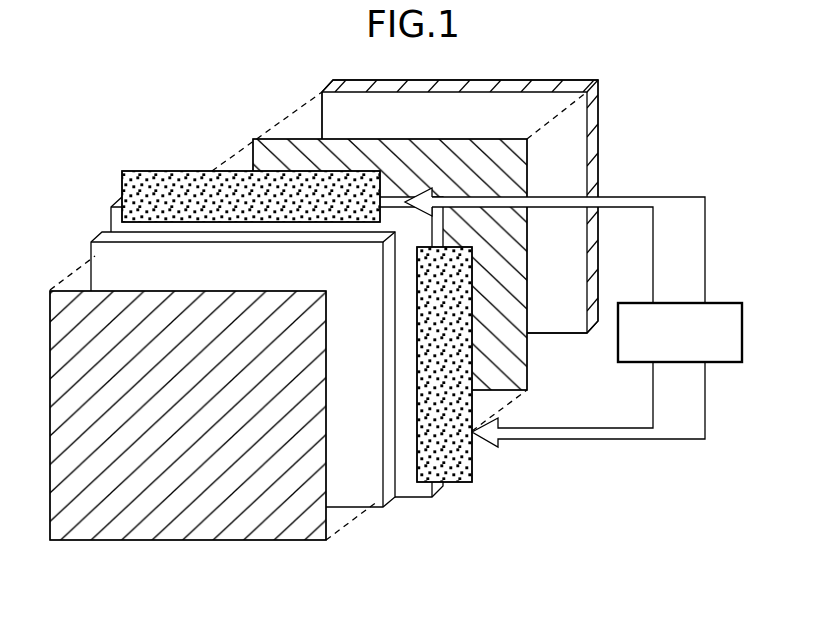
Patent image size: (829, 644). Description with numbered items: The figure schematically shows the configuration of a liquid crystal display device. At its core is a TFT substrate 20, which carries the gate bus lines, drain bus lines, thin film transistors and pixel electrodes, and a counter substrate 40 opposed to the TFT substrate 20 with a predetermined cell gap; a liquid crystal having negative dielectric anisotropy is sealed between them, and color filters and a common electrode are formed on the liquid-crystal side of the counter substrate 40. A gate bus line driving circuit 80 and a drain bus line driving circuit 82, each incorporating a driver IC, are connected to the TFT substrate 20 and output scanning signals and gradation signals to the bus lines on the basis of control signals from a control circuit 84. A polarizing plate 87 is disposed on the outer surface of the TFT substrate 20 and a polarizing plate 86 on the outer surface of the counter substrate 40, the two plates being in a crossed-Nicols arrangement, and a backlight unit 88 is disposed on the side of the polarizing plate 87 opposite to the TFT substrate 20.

The TFT substrate 20 is at (429, 499).
The counter substrate 40 is at (380, 508).
The gate bus line driving circuit 80 is at (471, 467).
The drain bus line driving circuit 82 is at (168, 176).
The control circuit 84 is at (738, 303).
The polarizing plate 86 is at (203, 541).
The polarizing plate 87 is at (530, 374).
The backlight unit 88 is at (599, 121).